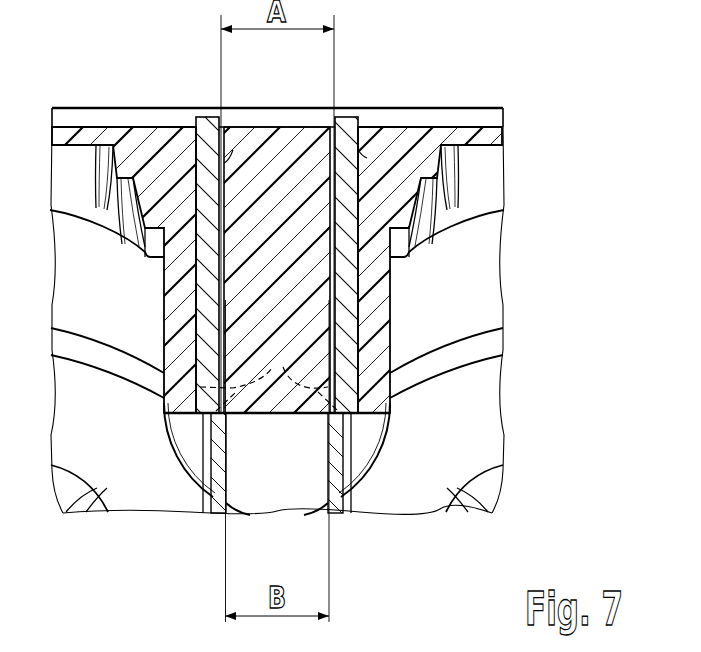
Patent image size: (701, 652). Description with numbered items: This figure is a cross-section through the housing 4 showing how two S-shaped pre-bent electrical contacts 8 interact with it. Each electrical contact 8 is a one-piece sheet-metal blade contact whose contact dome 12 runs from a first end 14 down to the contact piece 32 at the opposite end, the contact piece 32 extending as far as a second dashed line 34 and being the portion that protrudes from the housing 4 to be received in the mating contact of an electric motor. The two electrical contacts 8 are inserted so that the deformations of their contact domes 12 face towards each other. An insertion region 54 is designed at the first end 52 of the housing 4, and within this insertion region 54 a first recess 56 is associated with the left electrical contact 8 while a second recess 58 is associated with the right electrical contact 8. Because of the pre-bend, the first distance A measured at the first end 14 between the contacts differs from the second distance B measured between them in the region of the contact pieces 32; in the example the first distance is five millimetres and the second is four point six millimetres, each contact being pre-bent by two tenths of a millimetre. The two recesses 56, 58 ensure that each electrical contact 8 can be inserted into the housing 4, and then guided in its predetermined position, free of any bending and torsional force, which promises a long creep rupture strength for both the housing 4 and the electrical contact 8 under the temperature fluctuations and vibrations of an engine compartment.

The housing 4 is at (364, 306).
The electrical contact 8 is at (215, 530).
The contact dome 12 is at (350, 306).
The first end 14 is at (210, 117).
The contact piece 32 is at (226, 462).
The second dashed line 34 is at (278, 374).
The first end of the housing 52 is at (272, 125).
The insertion region 54 is at (290, 212).
The first recess 56 is at (228, 160).
The second recess 58 is at (367, 158).